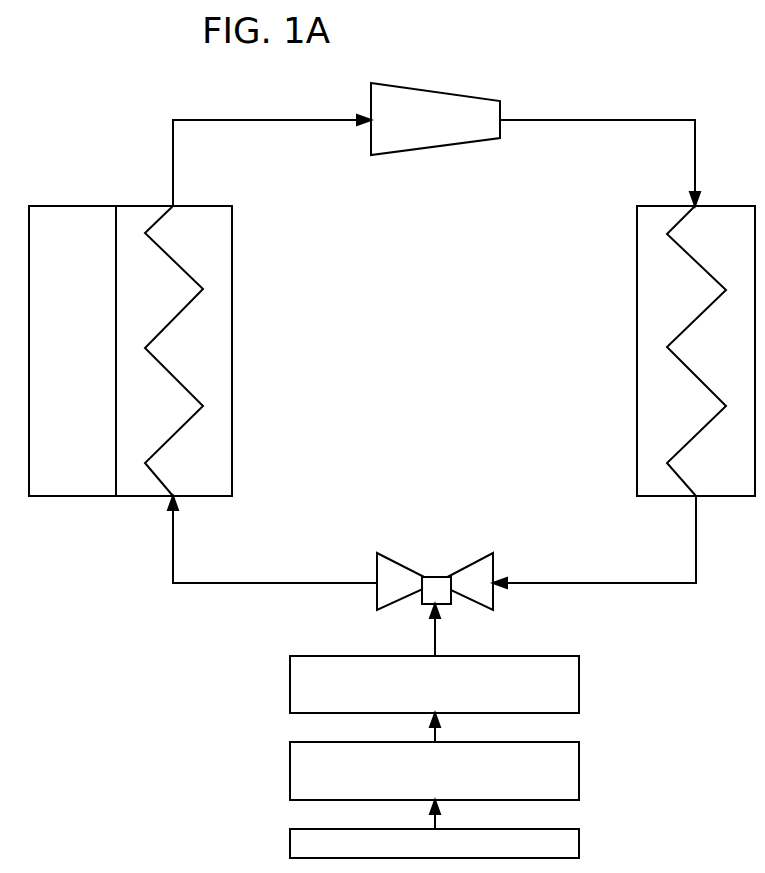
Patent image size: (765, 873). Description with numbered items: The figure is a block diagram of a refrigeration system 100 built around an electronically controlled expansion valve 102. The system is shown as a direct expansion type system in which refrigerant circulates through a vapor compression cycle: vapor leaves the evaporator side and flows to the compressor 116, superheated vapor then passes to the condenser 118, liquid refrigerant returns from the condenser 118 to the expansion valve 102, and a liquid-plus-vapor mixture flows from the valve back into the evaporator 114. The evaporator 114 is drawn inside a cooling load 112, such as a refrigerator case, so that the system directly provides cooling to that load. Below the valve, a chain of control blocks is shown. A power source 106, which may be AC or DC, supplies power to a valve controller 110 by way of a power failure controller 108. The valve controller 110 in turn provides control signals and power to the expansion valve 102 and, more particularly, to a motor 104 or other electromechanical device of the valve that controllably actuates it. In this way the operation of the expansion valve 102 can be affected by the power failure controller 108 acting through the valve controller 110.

The refrigeration system 100 is at (120, 118).
The electronically controlled expansion valve 102 is at (480, 572).
The motor 104 is at (472, 621).
The power source 106 is at (303, 847).
The power failure controller 108 is at (303, 763).
The valve controller 110 is at (303, 672).
The cooling load 112 is at (96, 222).
The evaporator 114 is at (221, 243).
The compressor 116 is at (418, 107).
The condenser 118 is at (657, 262).